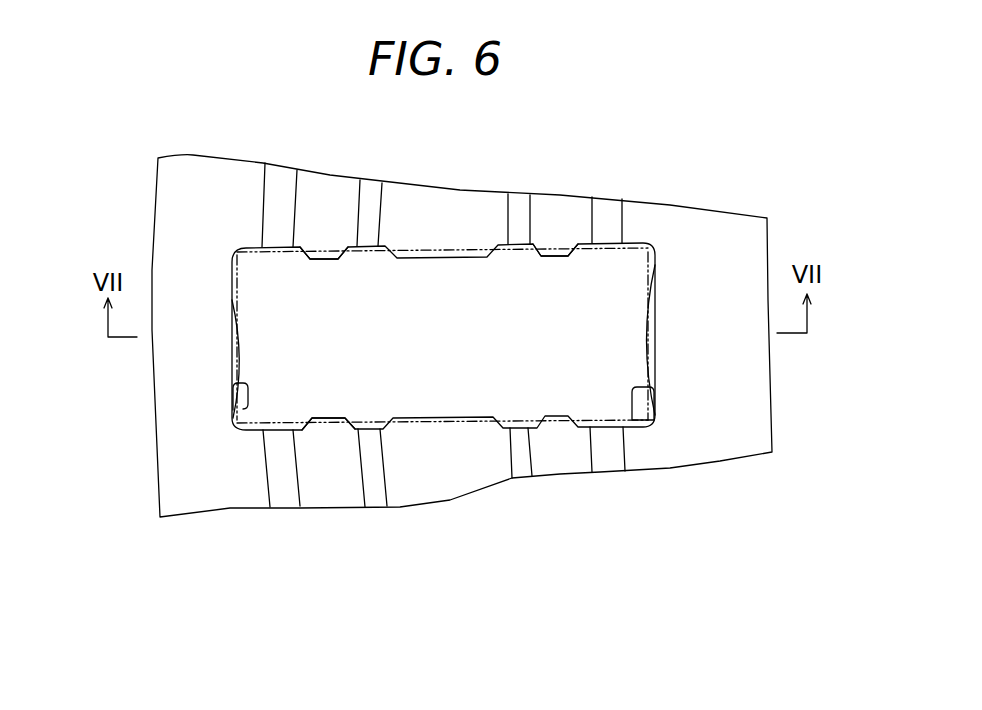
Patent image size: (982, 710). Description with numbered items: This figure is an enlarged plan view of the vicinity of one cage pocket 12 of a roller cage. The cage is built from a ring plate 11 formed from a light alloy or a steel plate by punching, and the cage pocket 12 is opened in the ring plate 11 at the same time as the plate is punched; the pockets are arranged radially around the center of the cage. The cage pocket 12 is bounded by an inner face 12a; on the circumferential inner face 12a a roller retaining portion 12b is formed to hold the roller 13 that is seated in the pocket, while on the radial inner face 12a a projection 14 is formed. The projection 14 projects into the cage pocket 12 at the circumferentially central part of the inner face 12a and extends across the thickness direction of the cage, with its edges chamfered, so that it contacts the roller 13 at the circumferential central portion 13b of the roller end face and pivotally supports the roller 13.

The ring plate 11 is at (726, 242).
The cage pocket 12 is at (652, 253).
The inner face 12a is at (243, 400).
The roller retaining portion 12b is at (328, 258).
The roller 13 is at (426, 248).
The circumferential central portion 13b is at (265, 440).
The projection 14 is at (265, 440).